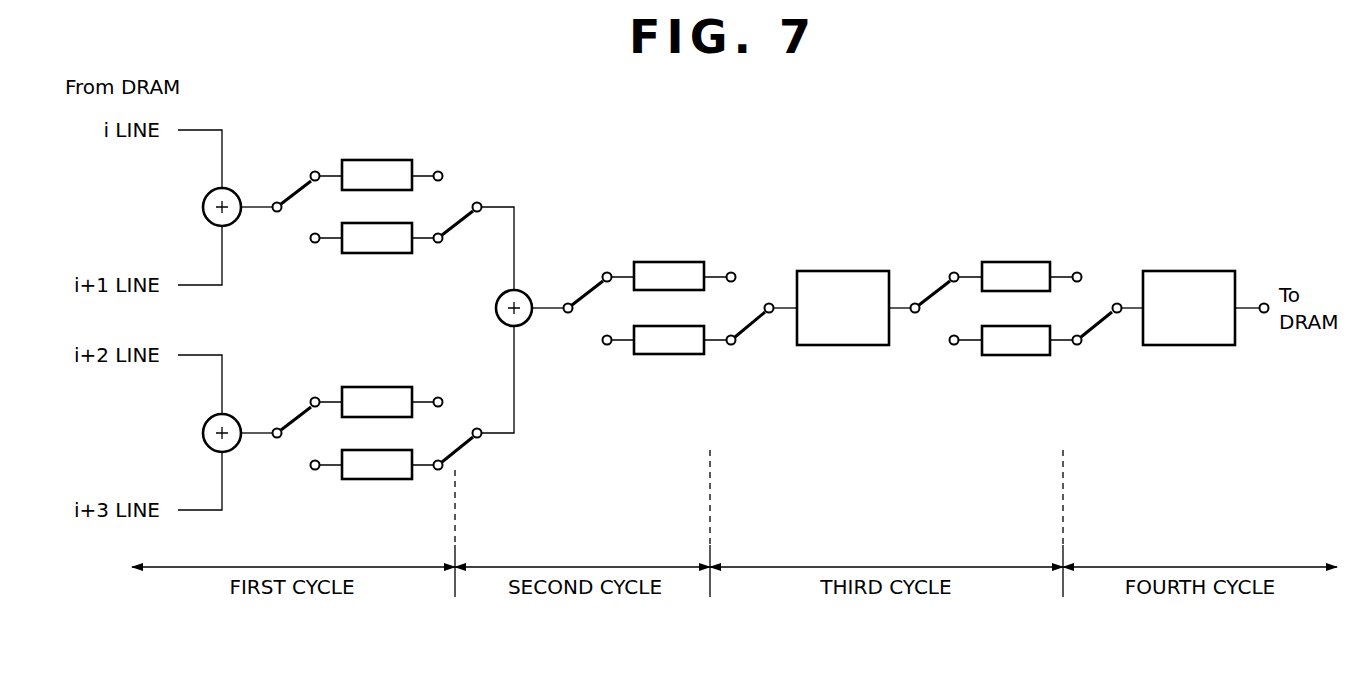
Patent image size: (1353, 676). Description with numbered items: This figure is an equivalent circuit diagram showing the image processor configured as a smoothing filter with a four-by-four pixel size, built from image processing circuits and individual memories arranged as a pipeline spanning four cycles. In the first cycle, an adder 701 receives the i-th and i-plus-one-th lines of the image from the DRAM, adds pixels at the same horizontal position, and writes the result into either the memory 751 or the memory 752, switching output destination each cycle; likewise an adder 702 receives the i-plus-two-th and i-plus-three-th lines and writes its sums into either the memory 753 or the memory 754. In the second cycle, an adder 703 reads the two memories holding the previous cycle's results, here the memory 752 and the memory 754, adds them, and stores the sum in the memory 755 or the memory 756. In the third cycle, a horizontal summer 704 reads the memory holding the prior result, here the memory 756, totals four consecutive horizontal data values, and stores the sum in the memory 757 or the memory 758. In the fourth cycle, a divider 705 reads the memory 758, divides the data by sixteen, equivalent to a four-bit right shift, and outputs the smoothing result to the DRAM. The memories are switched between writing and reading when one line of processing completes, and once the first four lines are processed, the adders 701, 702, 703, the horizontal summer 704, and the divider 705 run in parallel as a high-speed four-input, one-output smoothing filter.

The adder 701 is at (236, 191).
The adder 702 is at (236, 417).
The adder 703 is at (528, 292).
The horizontal summer 704 is at (847, 271).
The divider 705 is at (1198, 271).
The memory 751 is at (381, 160).
The memory 752 is at (381, 253).
The memory 753 is at (380, 387).
The memory 754 is at (380, 479).
The memory 755 is at (673, 262).
The memory 756 is at (673, 354).
The memory 757 is at (1020, 262).
The memory 758 is at (1020, 355).